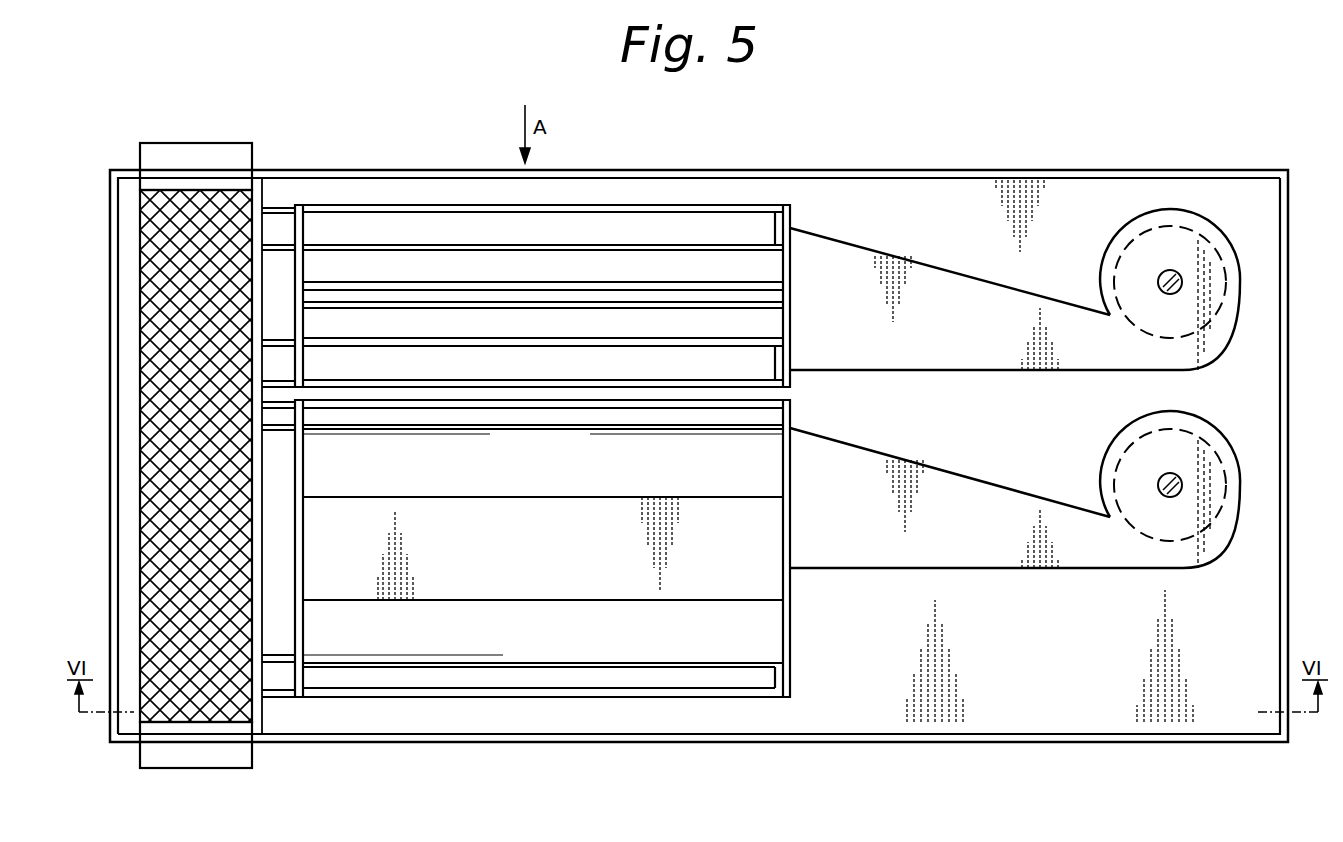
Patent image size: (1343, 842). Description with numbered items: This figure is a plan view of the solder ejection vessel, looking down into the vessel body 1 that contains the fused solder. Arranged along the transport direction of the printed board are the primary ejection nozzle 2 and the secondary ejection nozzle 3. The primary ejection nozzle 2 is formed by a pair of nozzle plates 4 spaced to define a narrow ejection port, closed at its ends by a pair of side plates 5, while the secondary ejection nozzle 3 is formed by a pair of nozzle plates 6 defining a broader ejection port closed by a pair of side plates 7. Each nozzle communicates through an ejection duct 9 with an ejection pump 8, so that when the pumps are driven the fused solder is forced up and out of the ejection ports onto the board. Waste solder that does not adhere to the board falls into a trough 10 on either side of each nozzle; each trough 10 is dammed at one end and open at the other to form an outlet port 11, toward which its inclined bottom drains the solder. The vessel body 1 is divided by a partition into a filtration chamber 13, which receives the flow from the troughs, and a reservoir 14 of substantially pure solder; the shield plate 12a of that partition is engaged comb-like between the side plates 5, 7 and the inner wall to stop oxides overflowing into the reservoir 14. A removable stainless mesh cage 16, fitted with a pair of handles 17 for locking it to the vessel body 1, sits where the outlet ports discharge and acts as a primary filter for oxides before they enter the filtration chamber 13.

The vessel body 1 is at (760, 736).
The primary ejection nozzle 2 is at (568, 292).
The secondary ejection nozzle 3 is at (513, 523).
The nozzle plates 4 is at (710, 306).
The side plates 5 is at (305, 262).
The nozzle plates 6 is at (577, 497).
The side plates 7 is at (303, 572).
The ejection pump 8 is at (1207, 323).
The ejection duct 9 is at (1000, 365).
The trough 10 is at (757, 358).
The outlet port 11 is at (268, 352).
The shield plate 12a is at (265, 228).
The filtration chamber 13 is at (125, 533).
The reservoir 14 is at (465, 718).
The cage 16 is at (153, 275).
The handles 17 is at (190, 143).